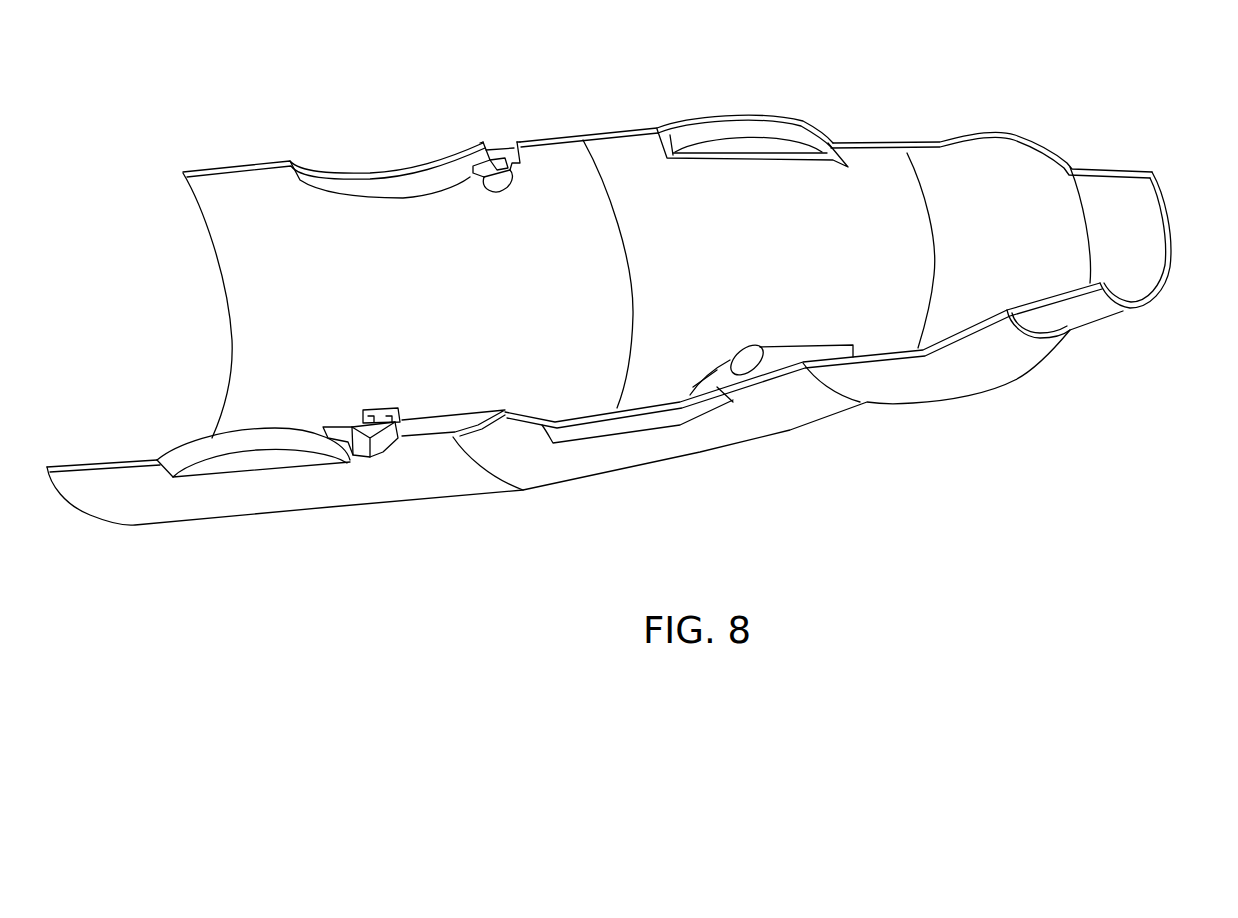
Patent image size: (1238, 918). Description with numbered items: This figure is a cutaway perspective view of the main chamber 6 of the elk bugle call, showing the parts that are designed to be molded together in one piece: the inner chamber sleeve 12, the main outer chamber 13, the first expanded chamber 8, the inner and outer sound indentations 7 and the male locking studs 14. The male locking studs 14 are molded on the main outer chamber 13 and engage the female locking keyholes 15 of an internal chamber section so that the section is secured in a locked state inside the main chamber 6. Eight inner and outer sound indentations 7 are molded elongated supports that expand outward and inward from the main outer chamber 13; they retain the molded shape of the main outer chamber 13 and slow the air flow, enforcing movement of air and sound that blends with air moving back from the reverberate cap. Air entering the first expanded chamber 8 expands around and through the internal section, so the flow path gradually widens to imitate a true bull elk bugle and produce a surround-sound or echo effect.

The main chamber 6 is at (612, 528).
The inner and outer sound indentations 7 is at (333, 183).
The first expanded chamber 8 is at (943, 177).
The inner chamber sleeve 12 is at (1107, 193).
The main outer chamber 13 is at (633, 470).
The male locking studs 14 is at (490, 190).
The female locking keyholes 15 is at (500, 147).